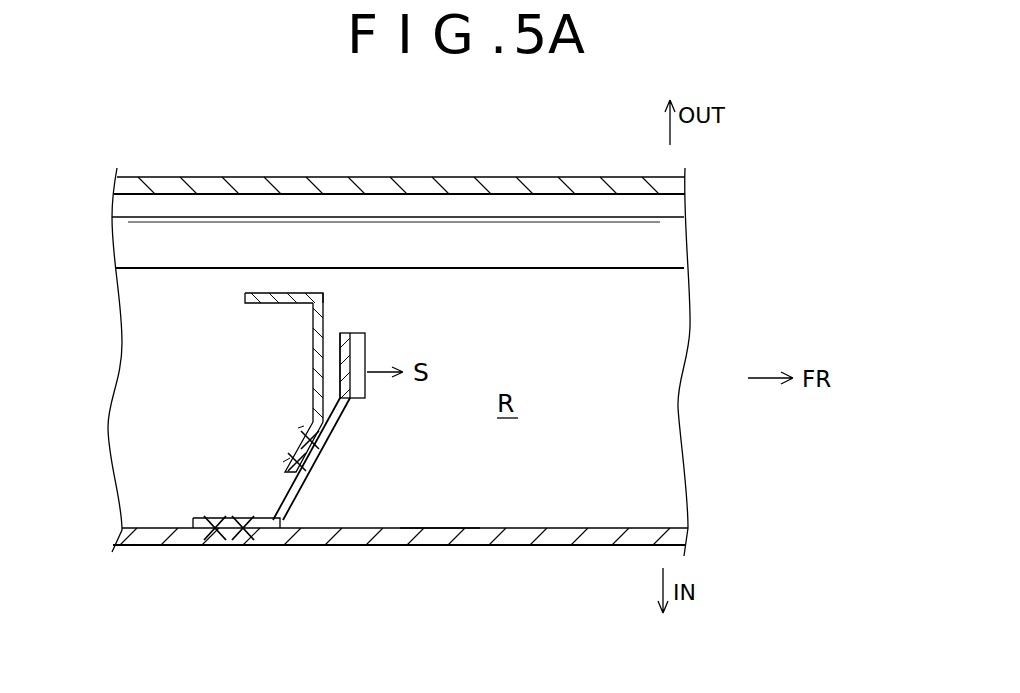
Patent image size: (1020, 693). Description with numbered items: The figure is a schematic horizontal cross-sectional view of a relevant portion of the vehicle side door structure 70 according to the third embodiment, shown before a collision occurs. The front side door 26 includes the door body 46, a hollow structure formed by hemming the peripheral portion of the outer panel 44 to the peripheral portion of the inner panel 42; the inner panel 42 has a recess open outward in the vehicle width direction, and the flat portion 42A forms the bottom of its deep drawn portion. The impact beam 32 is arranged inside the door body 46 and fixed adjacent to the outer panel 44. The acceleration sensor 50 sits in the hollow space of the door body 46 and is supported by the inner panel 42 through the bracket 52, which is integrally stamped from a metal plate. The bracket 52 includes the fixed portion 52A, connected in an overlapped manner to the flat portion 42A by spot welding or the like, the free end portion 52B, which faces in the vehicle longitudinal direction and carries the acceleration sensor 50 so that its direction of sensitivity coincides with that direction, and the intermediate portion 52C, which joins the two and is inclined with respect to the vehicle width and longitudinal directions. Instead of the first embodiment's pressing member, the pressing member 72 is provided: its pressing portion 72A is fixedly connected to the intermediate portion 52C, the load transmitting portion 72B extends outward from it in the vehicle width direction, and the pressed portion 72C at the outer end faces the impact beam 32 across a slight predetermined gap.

The outer panel 44 is at (553, 190).
The impact beam 32 is at (498, 257).
The door body 46 is at (484, 362).
The front side door 26 is at (720, 310).
The vehicle side door structure 70 is at (638, 432).
The acceleration sensor 50 is at (357, 352).
The bracket 52 is at (311, 478).
The fixed portion 52A is at (228, 530).
The free end portion 52B is at (352, 400).
The intermediate portion 52C is at (298, 484).
The inner panel 42 is at (526, 546).
The flat portion 42A is at (438, 538).
The pressing member 72 is at (251, 382).
The pressing portion 72A is at (269, 440).
The load transmitting portion 72B is at (311, 372).
The pressed portion 72C is at (282, 305).